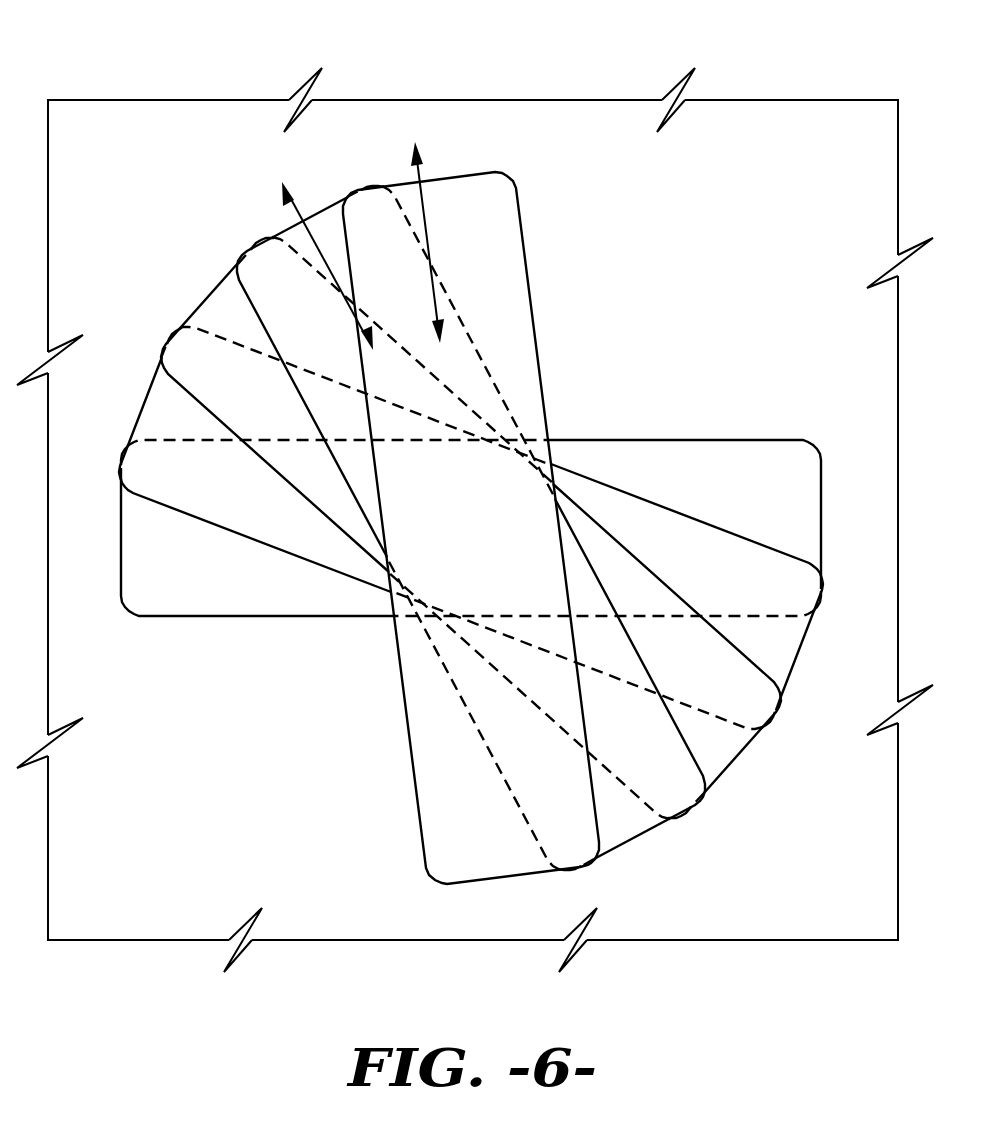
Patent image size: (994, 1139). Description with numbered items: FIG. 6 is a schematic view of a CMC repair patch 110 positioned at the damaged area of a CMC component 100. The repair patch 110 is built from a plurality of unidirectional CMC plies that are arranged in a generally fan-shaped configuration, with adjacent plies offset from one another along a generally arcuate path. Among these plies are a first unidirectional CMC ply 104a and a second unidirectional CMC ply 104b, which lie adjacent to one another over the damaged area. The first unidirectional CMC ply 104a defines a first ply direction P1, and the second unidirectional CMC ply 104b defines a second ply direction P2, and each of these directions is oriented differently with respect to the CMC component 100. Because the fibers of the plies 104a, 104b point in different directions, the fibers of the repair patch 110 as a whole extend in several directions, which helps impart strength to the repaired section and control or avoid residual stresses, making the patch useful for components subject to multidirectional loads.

The CMC component 100 is at (505, 128).
The CMC repair patch 110 is at (647, 298).
The first unidirectional CMC ply 104a is at (503, 238).
The second unidirectional CMC ply 104b is at (267, 282).
The first ply direction P1 is at (417, 178).
The second ply direction P2 is at (297, 218).